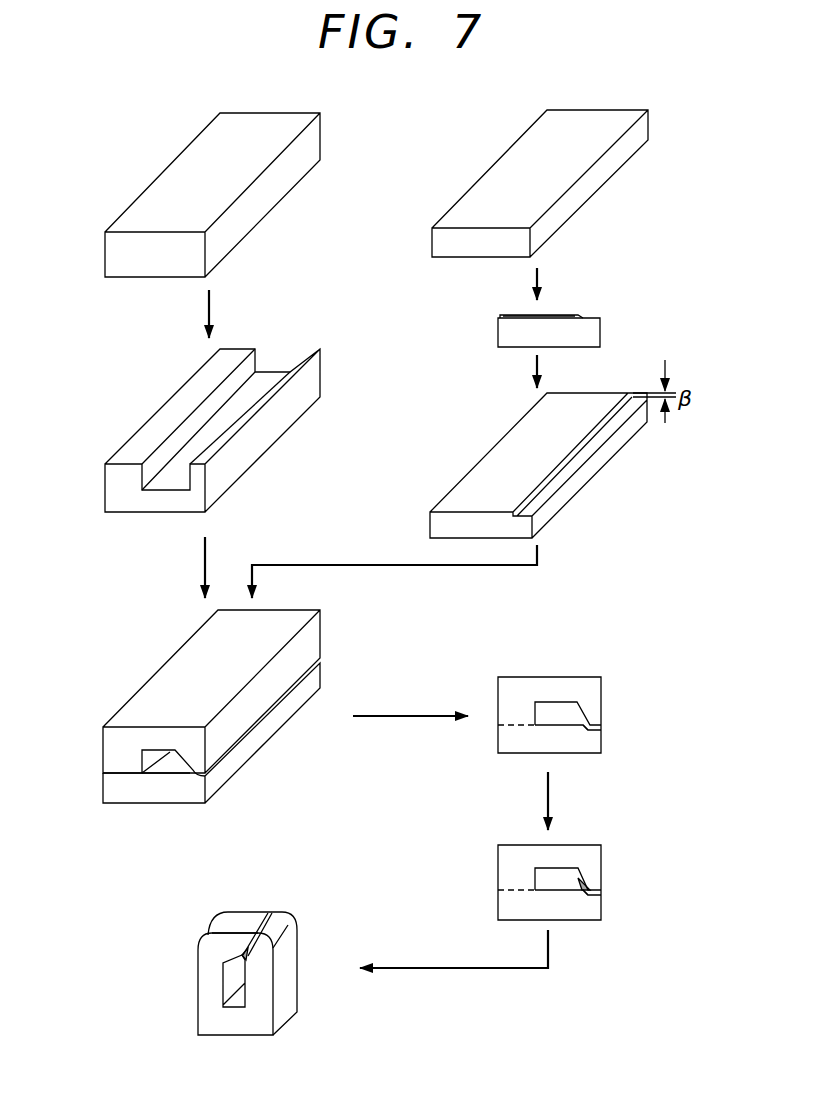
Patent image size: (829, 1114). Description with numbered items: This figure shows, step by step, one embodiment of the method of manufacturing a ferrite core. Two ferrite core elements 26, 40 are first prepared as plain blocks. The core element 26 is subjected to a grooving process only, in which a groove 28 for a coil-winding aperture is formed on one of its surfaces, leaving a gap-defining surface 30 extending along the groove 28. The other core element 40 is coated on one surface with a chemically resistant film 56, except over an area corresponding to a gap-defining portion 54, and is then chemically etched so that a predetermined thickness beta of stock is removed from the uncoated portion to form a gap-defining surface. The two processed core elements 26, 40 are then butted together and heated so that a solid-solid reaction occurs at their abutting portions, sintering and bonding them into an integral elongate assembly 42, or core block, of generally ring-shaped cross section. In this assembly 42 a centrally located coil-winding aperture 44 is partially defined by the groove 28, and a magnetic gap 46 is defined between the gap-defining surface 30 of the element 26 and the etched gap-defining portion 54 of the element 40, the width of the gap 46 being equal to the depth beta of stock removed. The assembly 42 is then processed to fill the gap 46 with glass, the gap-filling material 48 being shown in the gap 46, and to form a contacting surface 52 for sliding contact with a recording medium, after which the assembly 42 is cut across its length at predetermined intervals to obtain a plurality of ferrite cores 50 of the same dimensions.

The core element 26 is at (143, 170).
The groove 28 is at (225, 418).
The gap-defining surface 30 is at (303, 355).
The core element 40 is at (487, 158).
The integral assembly 42 is at (567, 668).
The coil-winding aperture 44 is at (238, 975).
The magnetic gap 46 is at (604, 727).
The bonding material 48 is at (585, 884).
The ferrite core 50 is at (190, 1000).
The contacting surface 52 is at (247, 918).
The gap-defining portion 54 is at (588, 318).
The chemically resistant film 56 is at (518, 316).